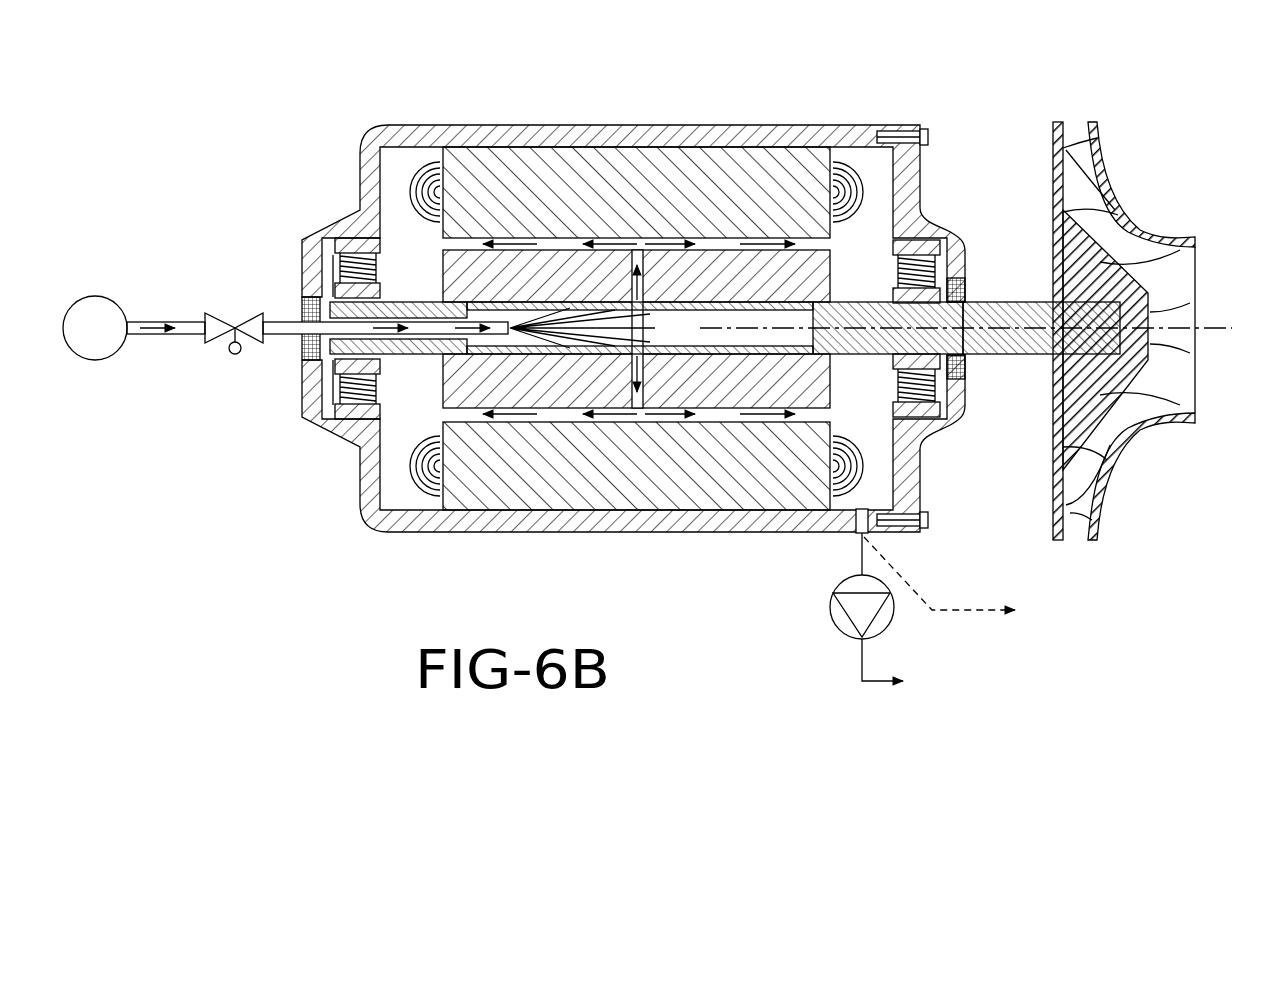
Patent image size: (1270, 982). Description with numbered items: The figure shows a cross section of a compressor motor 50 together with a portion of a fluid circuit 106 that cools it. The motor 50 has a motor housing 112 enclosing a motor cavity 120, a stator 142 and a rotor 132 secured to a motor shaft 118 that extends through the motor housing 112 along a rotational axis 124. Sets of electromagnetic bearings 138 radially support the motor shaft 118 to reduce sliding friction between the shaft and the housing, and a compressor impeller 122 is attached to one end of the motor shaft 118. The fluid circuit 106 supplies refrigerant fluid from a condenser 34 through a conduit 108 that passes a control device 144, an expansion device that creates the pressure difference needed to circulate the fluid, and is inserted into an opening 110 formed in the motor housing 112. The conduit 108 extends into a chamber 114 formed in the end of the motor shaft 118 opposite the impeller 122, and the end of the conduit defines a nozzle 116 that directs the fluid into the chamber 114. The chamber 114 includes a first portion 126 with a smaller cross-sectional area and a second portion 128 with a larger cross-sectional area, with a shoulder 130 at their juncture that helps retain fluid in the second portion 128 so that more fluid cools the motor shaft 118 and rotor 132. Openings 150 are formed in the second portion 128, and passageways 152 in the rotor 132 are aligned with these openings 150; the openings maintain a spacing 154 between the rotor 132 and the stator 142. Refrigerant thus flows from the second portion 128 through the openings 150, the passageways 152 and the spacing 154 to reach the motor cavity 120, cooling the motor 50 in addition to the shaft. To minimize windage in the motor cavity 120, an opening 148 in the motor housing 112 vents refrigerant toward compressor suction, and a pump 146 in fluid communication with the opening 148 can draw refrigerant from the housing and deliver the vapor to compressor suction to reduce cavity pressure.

The condenser 34 is at (95, 328).
The motor 50 is at (920, 165).
The fluid circuit 106 is at (160, 120).
The conduit 108 is at (147, 322).
The opening 110 is at (300, 310).
The motor housing 112 is at (575, 125).
The chamber 114 is at (815, 335).
The nozzle 116 is at (497, 322).
The motor shaft 118 is at (1017, 358).
The motor cavity 120 is at (392, 488).
The compressor impeller 122 is at (1128, 215).
The rotational axis 124 is at (1222, 328).
The first portion 126 is at (435, 330).
The second portion 128 is at (617, 328).
The shoulder 130 is at (470, 348).
The rotor 132 is at (440, 248).
The electromagnetic bearings 138 is at (355, 420).
The stator 142 is at (420, 168).
The control device 144 is at (210, 340).
The pump 146 is at (836, 615).
The opening 148 is at (858, 535).
The openings 150 is at (643, 315).
The passageways 152 is at (643, 252).
The spacing 154 is at (808, 250).